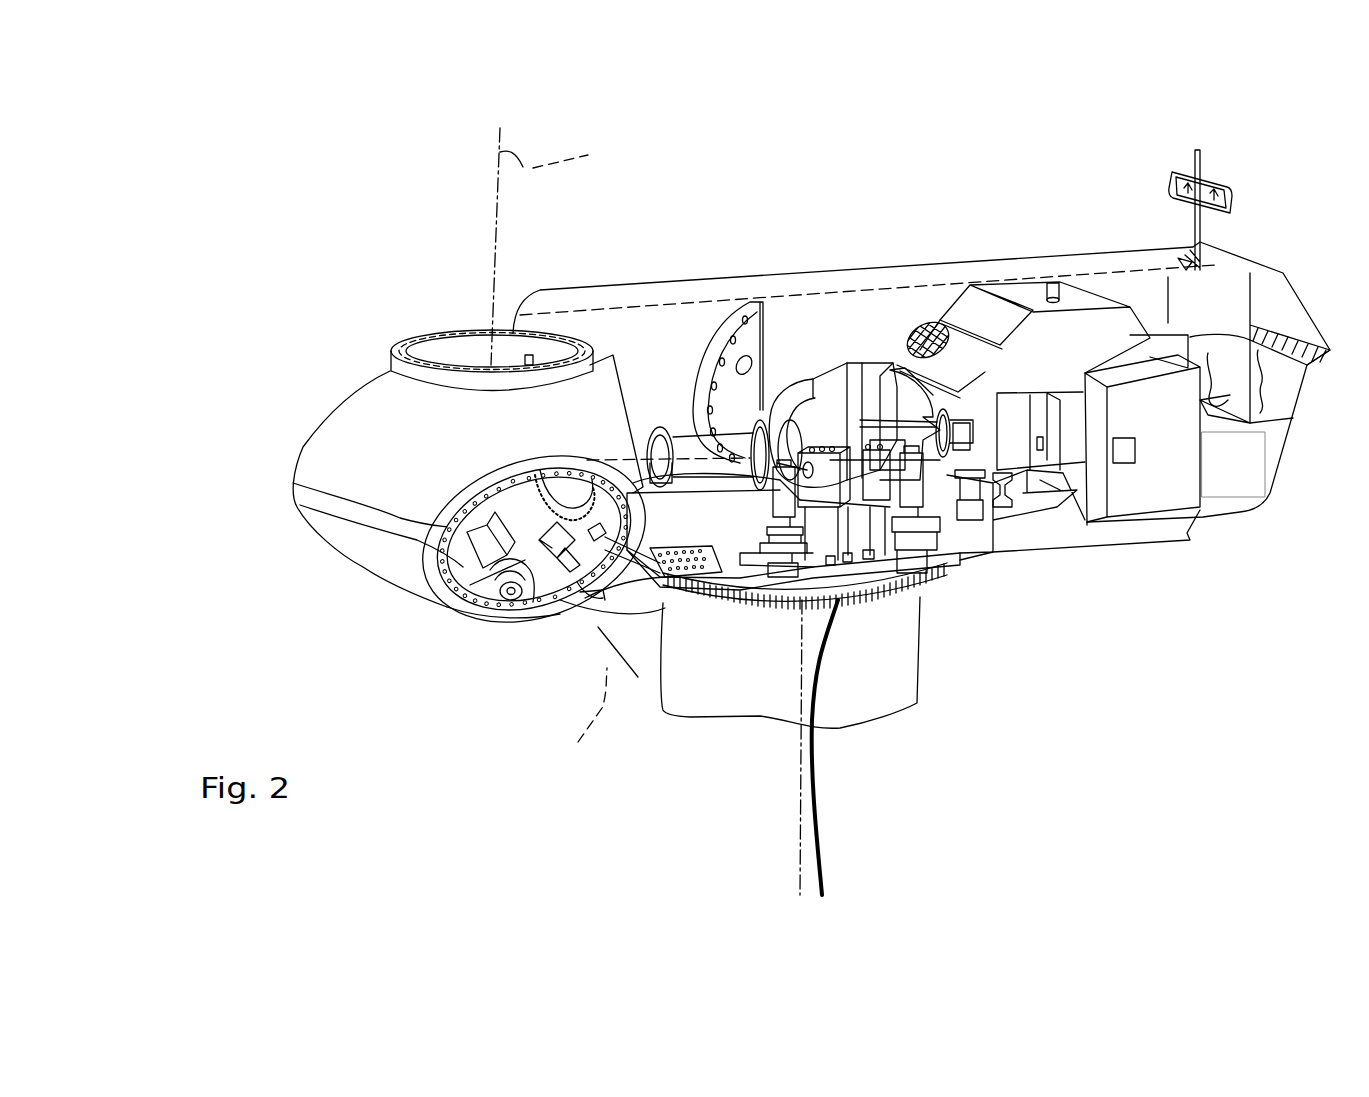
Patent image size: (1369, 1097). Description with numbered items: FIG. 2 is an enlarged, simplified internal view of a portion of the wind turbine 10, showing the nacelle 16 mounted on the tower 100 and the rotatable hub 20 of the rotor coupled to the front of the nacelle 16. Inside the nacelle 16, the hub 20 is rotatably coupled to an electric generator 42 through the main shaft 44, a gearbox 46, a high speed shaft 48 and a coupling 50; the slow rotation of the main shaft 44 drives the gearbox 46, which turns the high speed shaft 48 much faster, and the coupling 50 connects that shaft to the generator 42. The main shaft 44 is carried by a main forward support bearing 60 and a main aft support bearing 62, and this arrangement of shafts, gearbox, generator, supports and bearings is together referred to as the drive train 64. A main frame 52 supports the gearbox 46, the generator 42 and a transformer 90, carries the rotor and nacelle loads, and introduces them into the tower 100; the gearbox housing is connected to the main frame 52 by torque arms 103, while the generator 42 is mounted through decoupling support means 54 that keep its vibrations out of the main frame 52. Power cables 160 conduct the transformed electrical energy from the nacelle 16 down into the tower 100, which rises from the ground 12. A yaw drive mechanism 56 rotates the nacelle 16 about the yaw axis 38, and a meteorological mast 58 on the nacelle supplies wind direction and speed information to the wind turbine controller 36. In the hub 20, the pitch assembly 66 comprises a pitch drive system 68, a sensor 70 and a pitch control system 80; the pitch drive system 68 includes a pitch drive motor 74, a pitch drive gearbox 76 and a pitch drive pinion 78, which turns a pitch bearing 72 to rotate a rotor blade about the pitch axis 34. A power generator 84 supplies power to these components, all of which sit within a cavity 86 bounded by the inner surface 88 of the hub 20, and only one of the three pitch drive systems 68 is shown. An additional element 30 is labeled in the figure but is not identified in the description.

The wind turbine 10 is at (318, 206).
The ground 12 is at (846, 716).
The nacelle 16 is at (918, 168).
The hub 20 is at (280, 463).
The main shaft 30 is at (705, 425).
The pitch axis 34 is at (564, 448).
The wind turbine controller 36 is at (1133, 400).
The yaw axis 38 is at (800, 778).
The electric generator 42 is at (1030, 495).
The main shaft 44 is at (665, 425).
The gearbox 46 is at (842, 397).
The high speed shaft 48 is at (970, 560).
The coupling 50 is at (975, 395).
The main frame 52 is at (935, 585).
The decoupling support means 54 is at (990, 505).
The yaw drive mechanism 56 is at (788, 600).
The meteorological mast 58 is at (1232, 190).
The main forward support bearing 60 is at (640, 463).
The main aft support bearing 62 is at (776, 420).
The drive train 64 is at (723, 370).
The pitch assembly 66 is at (487, 458).
The pitch drive system 68 is at (465, 565).
The sensor 70 is at (652, 610).
The pitch bearing 72 is at (460, 603).
The pitch drive motor 74 is at (458, 552).
The pitch drive gearbox 76 is at (518, 540).
The pitch drive pinion 78 is at (490, 620).
The pitch control system 80 is at (562, 570).
The power generator 84 is at (580, 595).
The cavity 86 is at (580, 598).
The inner surface 88 is at (573, 470).
The transformer 90 is at (447, 528).
The tower 100 is at (883, 295).
The torque arms 103 is at (856, 565).
The power cables 160 is at (822, 790).